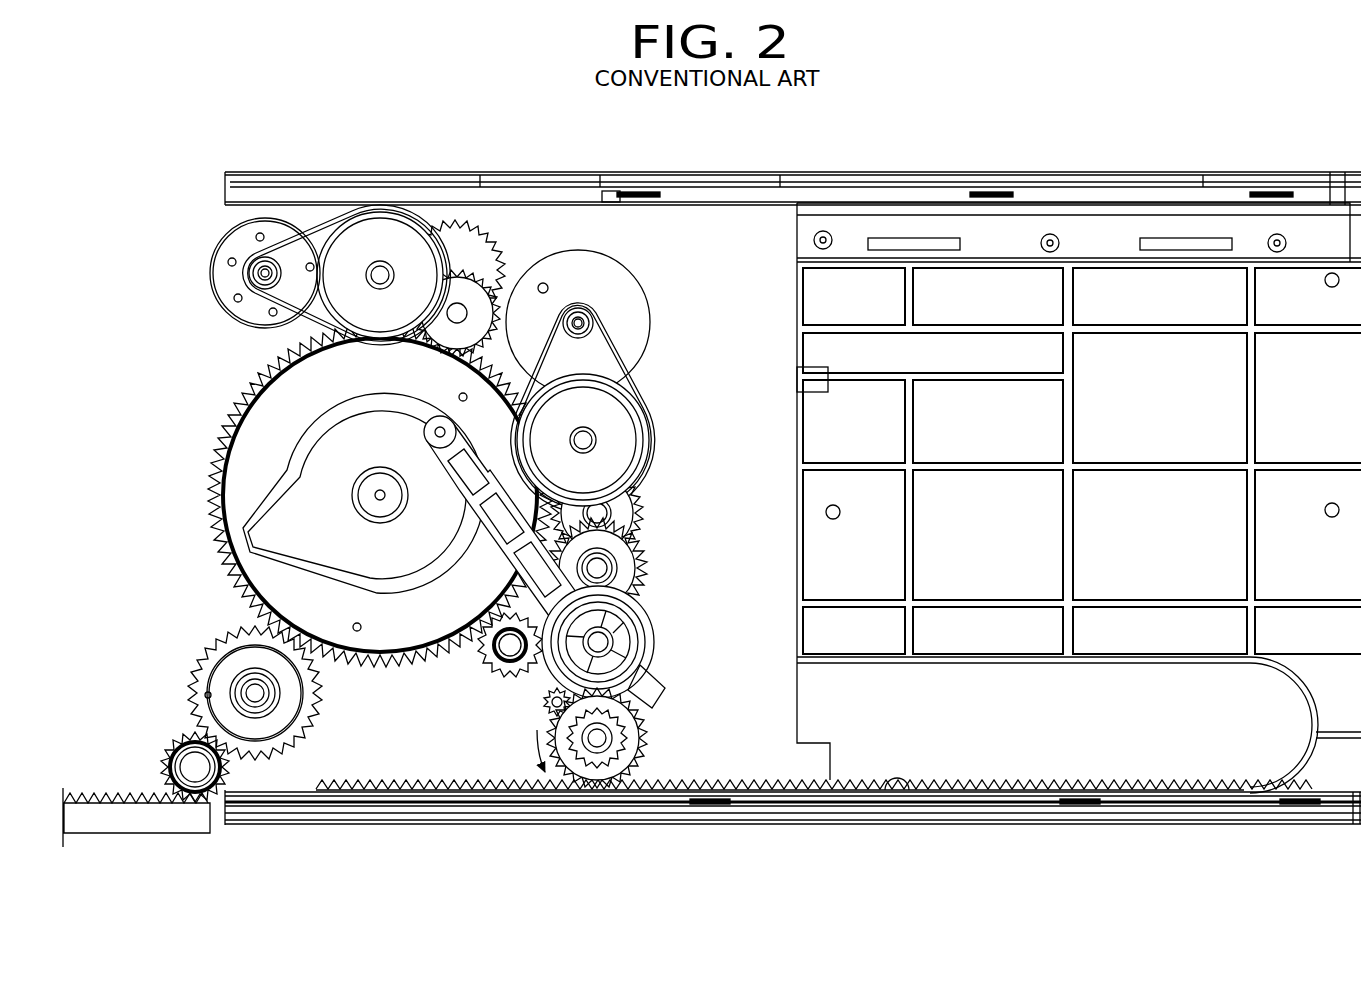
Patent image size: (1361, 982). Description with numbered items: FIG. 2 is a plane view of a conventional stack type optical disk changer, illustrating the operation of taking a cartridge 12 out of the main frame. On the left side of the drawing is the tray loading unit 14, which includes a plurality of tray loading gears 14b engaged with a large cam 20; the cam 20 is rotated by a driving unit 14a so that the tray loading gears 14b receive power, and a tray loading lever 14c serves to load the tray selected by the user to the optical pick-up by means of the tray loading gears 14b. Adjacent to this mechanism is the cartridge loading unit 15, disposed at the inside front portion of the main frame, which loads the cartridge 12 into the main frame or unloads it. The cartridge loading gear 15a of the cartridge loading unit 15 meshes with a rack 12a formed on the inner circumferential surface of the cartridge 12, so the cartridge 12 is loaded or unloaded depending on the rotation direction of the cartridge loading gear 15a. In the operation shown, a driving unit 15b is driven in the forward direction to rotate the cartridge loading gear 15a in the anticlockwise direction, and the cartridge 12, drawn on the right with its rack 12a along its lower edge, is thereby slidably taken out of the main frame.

The cartridge 12 is at (970, 647).
The rack 12a is at (897, 790).
The tray loading unit 14 is at (97, 576).
The driving unit 14a is at (195, 262).
The tray loading gears 14b is at (176, 718).
The tray loading lever 14c is at (108, 795).
The cartridge loading unit 15 is at (695, 683).
The cartridge loading gear 15a is at (598, 765).
The driving unit 15b is at (609, 567).
The cam 20 is at (210, 478).